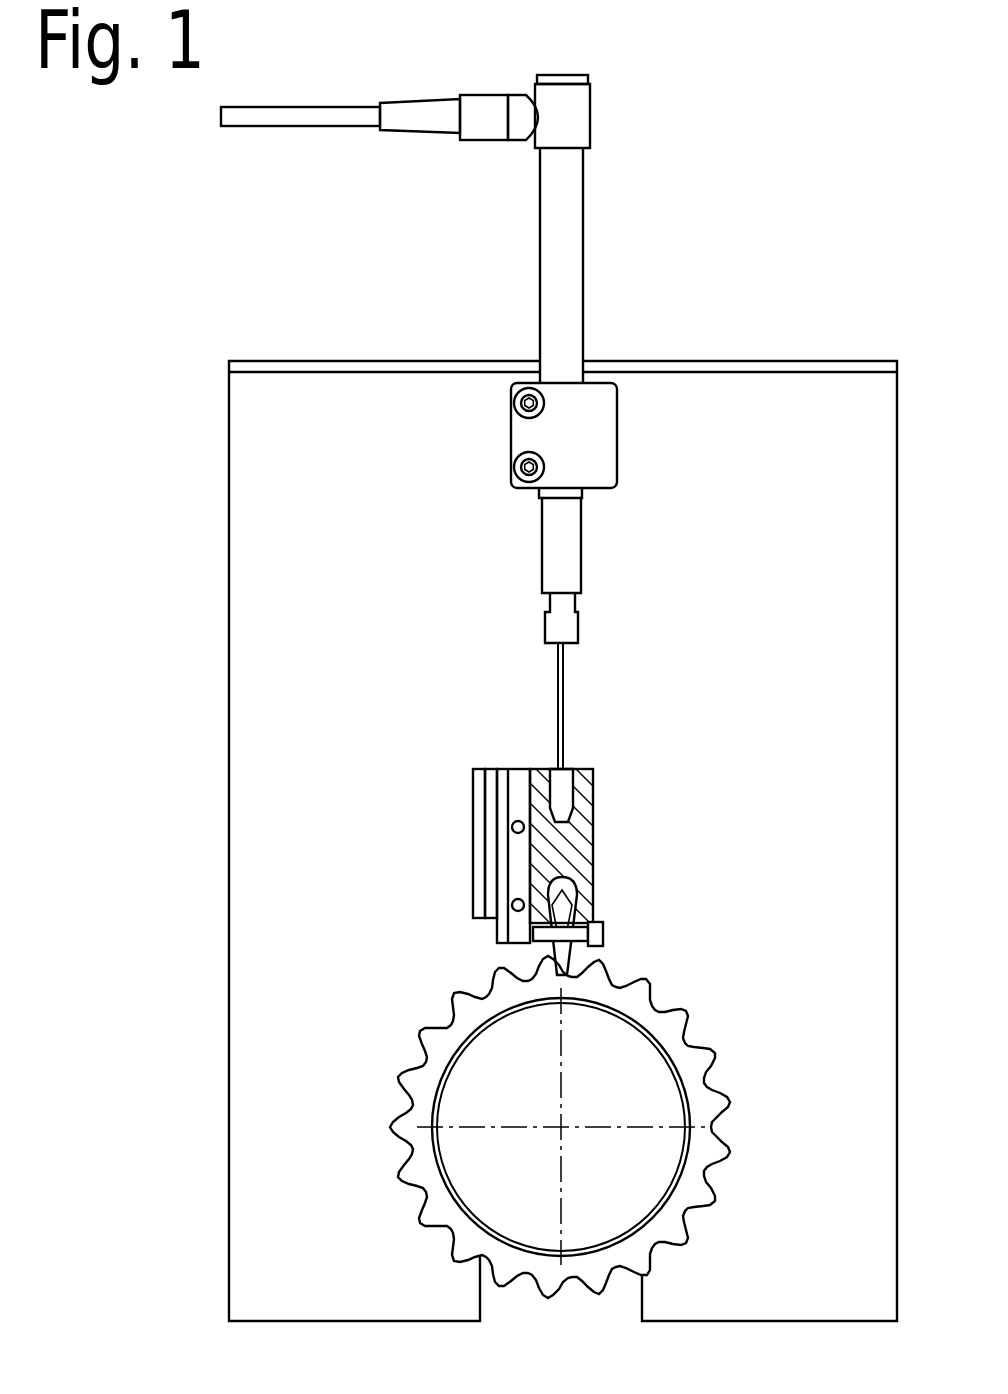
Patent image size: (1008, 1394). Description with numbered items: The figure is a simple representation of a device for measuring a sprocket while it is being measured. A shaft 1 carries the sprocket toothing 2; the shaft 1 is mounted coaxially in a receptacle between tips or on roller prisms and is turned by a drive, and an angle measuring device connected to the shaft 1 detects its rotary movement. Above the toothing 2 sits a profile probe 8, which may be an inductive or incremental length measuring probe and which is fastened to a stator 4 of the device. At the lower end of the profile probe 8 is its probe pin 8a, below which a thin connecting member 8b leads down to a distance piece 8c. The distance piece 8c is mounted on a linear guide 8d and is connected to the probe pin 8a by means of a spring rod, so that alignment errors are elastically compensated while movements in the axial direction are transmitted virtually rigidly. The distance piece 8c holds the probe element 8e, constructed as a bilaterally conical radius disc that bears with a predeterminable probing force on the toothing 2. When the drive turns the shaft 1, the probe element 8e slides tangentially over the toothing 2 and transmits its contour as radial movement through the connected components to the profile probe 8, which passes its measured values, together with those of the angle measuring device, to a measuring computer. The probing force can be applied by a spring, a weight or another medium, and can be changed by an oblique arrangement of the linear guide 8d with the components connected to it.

The shaft 1 is at (493, 1095).
The sprocket toothing 2 is at (443, 1013).
The stator 4 is at (380, 480).
The profile probe 8 is at (566, 304).
The probe pin 8a is at (558, 602).
The sensor wire 8b is at (560, 698).
The distance piece 8c is at (550, 850).
The linear guide 8d is at (480, 827).
The probe element 8e is at (563, 950).